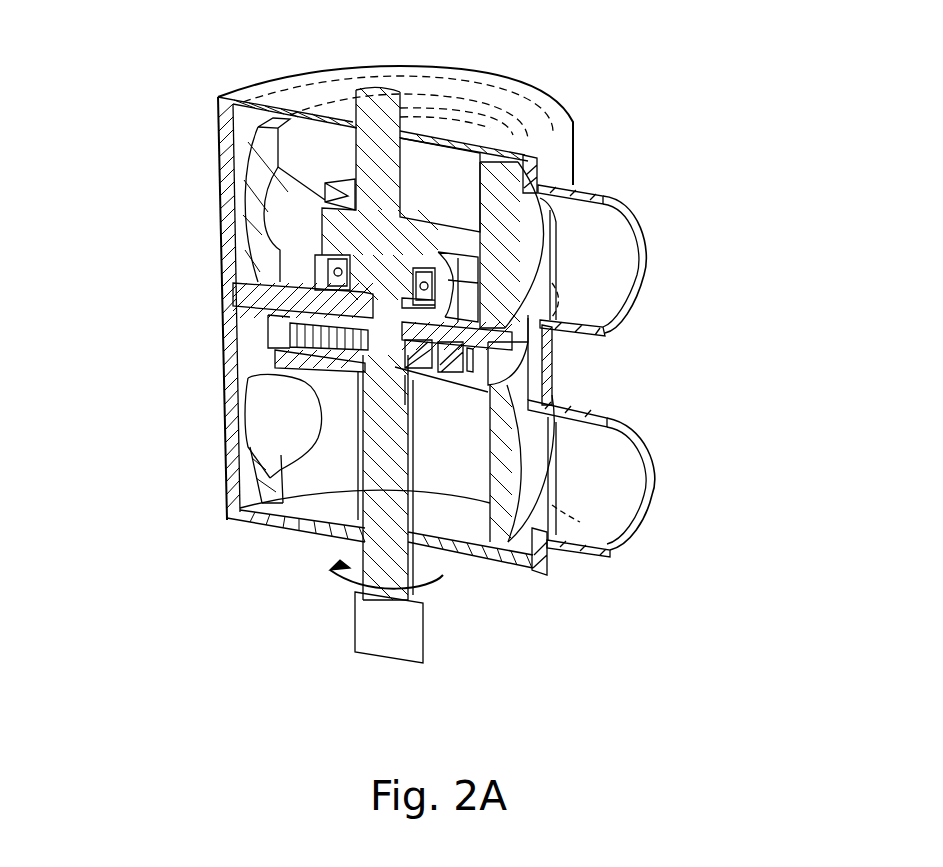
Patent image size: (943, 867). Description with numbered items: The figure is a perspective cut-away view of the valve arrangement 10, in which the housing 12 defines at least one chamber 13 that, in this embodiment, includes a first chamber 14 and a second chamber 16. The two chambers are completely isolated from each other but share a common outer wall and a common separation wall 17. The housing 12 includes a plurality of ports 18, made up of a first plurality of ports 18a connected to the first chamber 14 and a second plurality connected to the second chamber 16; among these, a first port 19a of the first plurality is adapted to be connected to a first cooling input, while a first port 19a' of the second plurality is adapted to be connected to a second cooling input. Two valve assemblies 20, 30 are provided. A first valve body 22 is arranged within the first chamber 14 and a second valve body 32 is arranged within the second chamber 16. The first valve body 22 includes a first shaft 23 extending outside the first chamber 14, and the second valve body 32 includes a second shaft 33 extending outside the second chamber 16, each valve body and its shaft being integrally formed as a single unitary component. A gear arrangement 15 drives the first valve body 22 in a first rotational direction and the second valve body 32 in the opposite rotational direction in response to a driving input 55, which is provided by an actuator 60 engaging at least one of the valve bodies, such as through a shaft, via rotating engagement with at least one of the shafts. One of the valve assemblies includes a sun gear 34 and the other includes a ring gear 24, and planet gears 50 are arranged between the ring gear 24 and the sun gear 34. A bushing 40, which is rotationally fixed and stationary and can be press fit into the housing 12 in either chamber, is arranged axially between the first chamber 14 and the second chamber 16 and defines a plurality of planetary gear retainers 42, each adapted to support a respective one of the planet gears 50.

The valve arrangement 10 is at (590, 128).
The housing 12 is at (541, 543).
The chamber 13 is at (382, 425).
The first chamber 14 is at (235, 112).
The gear arrangement 15 is at (300, 350).
The second chamber 16 is at (480, 528).
The separation wall 17 is at (233, 290).
The ports 18 is at (648, 292).
The first plurality of ports 18a is at (617, 223).
The first port 19a is at (630, 259).
The first port 19a' is at (630, 498).
The valve assembly 20 is at (440, 200).
The first valve body 22 is at (505, 235).
The first shaft 23 is at (377, 140).
The ring gear 24 is at (545, 407).
The valve assembly 30 is at (352, 475).
The second valve body 32 is at (503, 510).
The second shaft 33 is at (262, 520).
The sun gear 34 is at (278, 335).
The bushing 40 is at (525, 368).
The planetary gear retainers 42 is at (615, 435).
The planet gears 50 is at (435, 460).
The driving input 55 is at (345, 568).
The actuator 60 is at (385, 648).